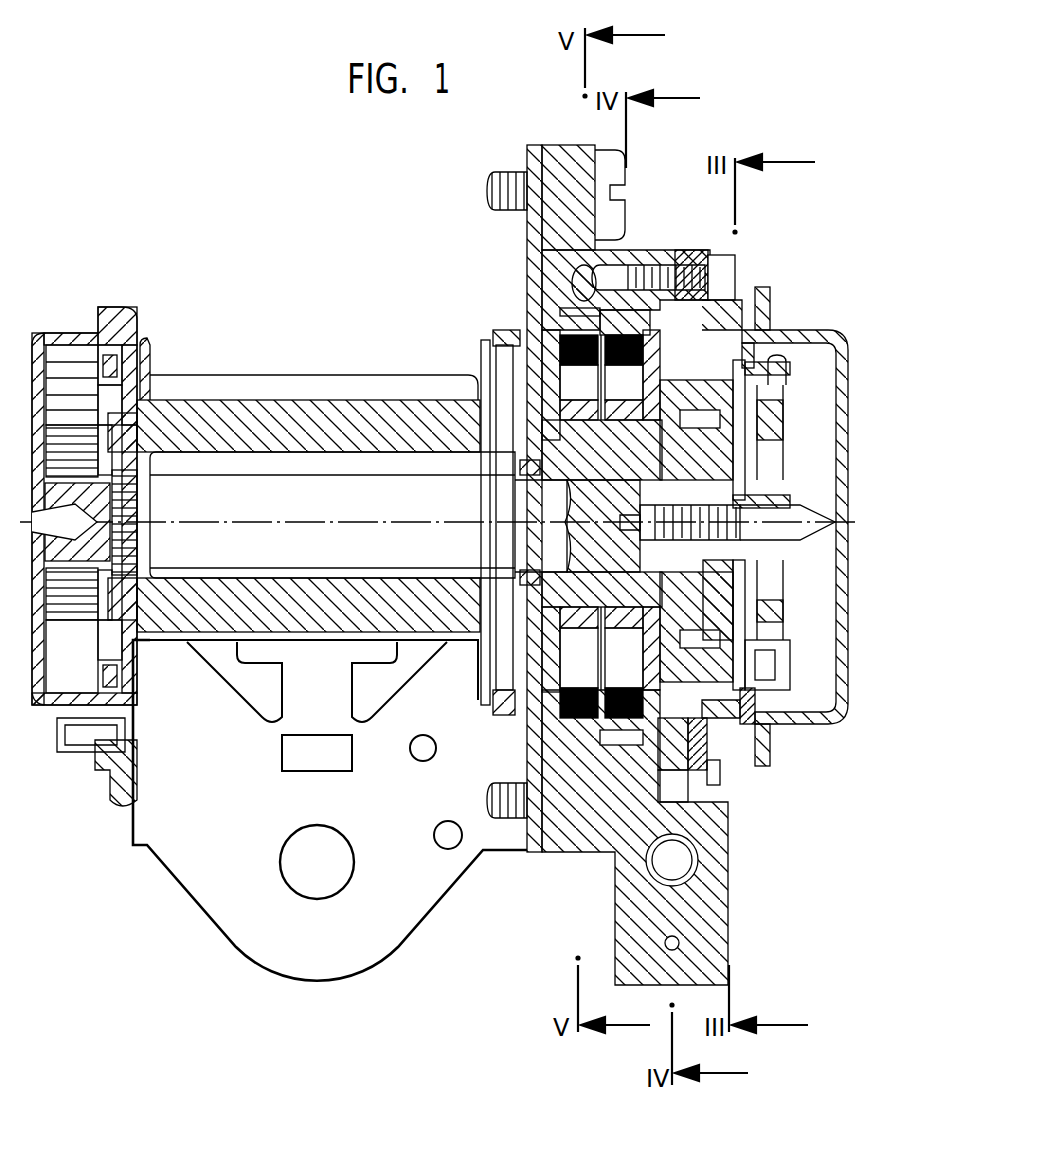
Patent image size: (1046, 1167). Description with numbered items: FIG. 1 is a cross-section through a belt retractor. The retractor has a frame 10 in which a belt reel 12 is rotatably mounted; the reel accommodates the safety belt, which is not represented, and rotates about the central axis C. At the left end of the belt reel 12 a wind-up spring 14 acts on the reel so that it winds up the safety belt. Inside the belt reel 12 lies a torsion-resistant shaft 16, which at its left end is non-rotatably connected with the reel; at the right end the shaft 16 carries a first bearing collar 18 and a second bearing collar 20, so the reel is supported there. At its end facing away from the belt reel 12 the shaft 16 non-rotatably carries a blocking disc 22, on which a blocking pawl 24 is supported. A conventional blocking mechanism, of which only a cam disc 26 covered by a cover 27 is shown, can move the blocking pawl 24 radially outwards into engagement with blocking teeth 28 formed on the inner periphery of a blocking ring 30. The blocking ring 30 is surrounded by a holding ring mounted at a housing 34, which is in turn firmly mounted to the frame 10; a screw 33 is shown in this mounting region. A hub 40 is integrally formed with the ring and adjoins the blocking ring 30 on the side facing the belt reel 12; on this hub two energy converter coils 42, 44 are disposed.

The frame 10 is at (230, 898).
The belt reel 12 is at (200, 412).
The wind-up spring 14 is at (67, 420).
The torsion-resistant shaft 16 is at (258, 487).
The first bearing collar 18 is at (470, 450).
The second bearing collar 20 is at (495, 345).
The blocking disc 22 is at (745, 410).
The blocking pawl 24 is at (745, 605).
The cam disc 26 is at (786, 437).
The cover 27 is at (840, 335).
The blocking teeth 28 is at (740, 655).
The blocking ring 30 is at (770, 750).
The screw 33 is at (712, 318).
The housing 34 is at (570, 810).
The hub 40 is at (545, 316).
The energy converter coil 42 is at (548, 722).
The energy converter coil 44 is at (548, 745).
The center axis C is at (333, 518).